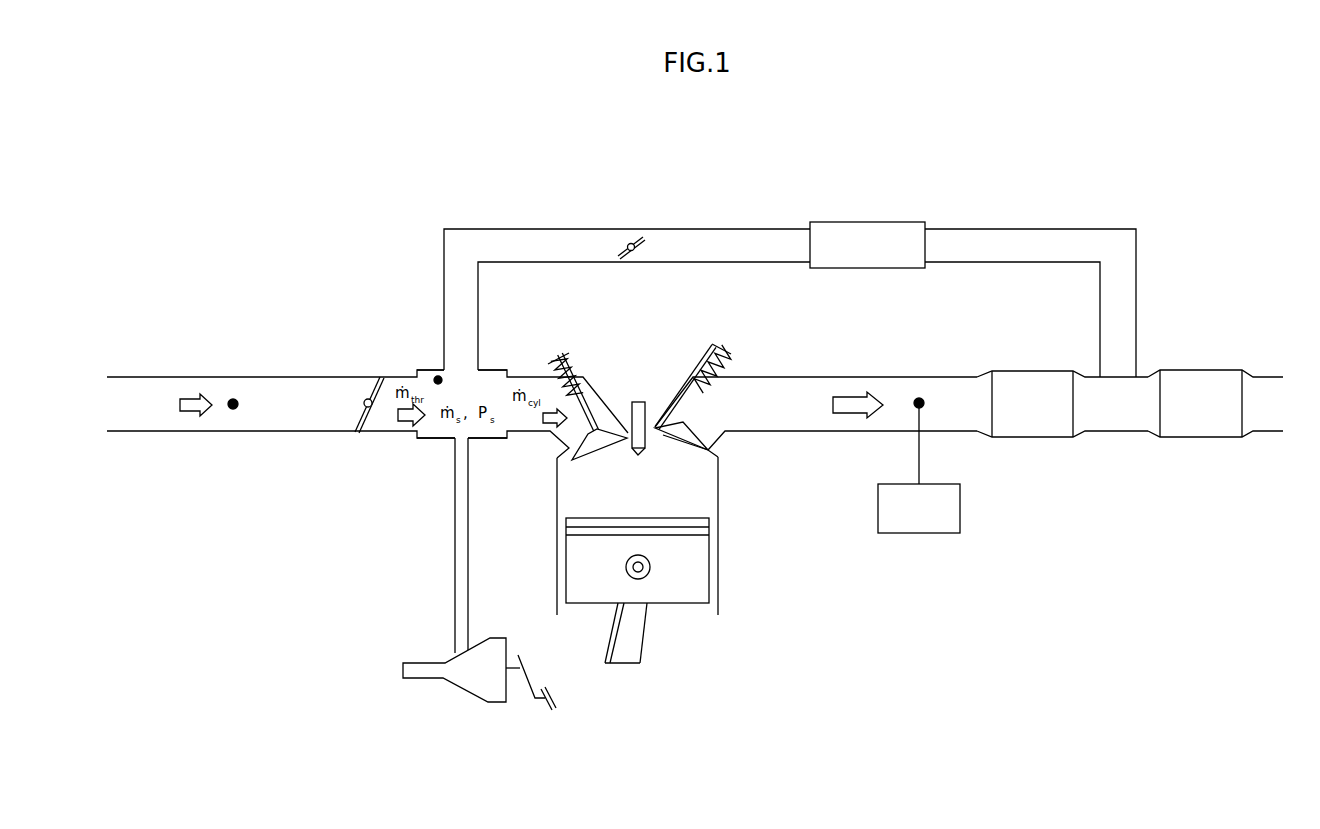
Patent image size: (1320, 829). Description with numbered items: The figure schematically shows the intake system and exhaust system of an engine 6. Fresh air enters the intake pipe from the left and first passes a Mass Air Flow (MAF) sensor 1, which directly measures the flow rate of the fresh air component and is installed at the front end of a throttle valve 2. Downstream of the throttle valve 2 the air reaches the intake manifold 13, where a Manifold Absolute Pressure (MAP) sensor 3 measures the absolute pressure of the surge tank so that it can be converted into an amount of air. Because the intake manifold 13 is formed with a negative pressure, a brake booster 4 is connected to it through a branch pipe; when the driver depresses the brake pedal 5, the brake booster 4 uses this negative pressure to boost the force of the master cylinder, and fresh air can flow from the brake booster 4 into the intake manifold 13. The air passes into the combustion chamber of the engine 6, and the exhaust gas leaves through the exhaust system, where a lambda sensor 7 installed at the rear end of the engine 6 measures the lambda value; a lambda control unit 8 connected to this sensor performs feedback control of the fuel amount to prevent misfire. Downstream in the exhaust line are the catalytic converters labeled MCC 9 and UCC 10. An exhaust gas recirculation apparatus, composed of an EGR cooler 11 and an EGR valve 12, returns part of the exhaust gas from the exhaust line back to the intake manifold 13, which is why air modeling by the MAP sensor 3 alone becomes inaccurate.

The Mass Air Flow (MAF) sensor 1 is at (231, 410).
The throttle valve 2 is at (366, 392).
The Manifold Absolute Pressure (MAP) sensor 3 is at (436, 376).
The brake booster 4 is at (467, 690).
The brake pedal 5 is at (550, 697).
The engine 6 is at (718, 537).
The lambda sensor 7 is at (921, 395).
The lambda control unit 8 is at (918, 533).
The manifold catalytic converter (MCC) 9 is at (1030, 437).
The underfloor catalytic converter (UCC) 10 is at (1200, 437).
The EGR cooler 11 is at (867, 222).
The EGR valve 12 is at (636, 234).
The intake manifold 13 is at (433, 440).